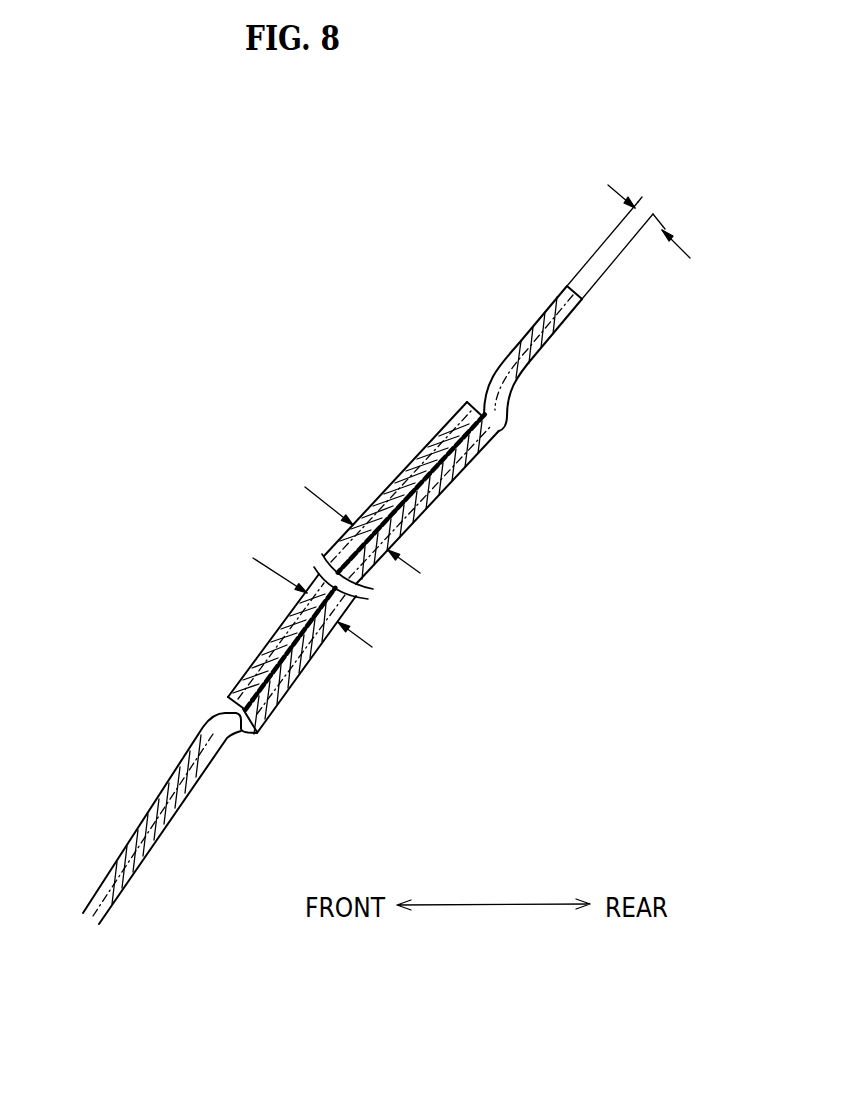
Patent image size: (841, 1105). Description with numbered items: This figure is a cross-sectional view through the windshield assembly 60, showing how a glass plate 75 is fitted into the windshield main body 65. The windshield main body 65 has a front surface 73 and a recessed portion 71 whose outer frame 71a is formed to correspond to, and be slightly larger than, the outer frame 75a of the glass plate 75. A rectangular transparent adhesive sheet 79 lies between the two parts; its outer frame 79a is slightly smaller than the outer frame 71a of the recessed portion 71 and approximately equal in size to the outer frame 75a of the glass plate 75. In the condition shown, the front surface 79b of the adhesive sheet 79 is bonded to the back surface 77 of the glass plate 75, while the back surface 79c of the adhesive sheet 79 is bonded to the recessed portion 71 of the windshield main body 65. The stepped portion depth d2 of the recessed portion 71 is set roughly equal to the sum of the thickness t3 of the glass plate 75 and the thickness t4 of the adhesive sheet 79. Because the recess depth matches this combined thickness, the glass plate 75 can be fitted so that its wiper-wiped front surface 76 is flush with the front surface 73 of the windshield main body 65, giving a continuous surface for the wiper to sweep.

The seam structure 60 is at (205, 327).
The windshield main body 65 is at (510, 341).
The recessed portion 71 is at (442, 428).
The outer frame of the recessed portion 71a is at (482, 405).
The front surface of the windshield main body 73 is at (546, 318).
The glass plate 75 is at (278, 625).
The outer frame of the glass plate 75a is at (225, 705).
The wiper-wiped surface 76 is at (395, 480).
The back surface of the glass plate 77 is at (242, 678).
The adhesive sheet 79 is at (445, 492).
The outer frame of the adhesive sheet 79a is at (240, 735).
The front surface of the adhesive sheet 79b is at (465, 467).
The back surface of the adhesive sheet 79c is at (440, 492).
The thickness of the glass plate t3 is at (341, 515).
The thickness of the adhesive sheet t4 is at (292, 590).
The stepped portion depth d2 is at (650, 219).